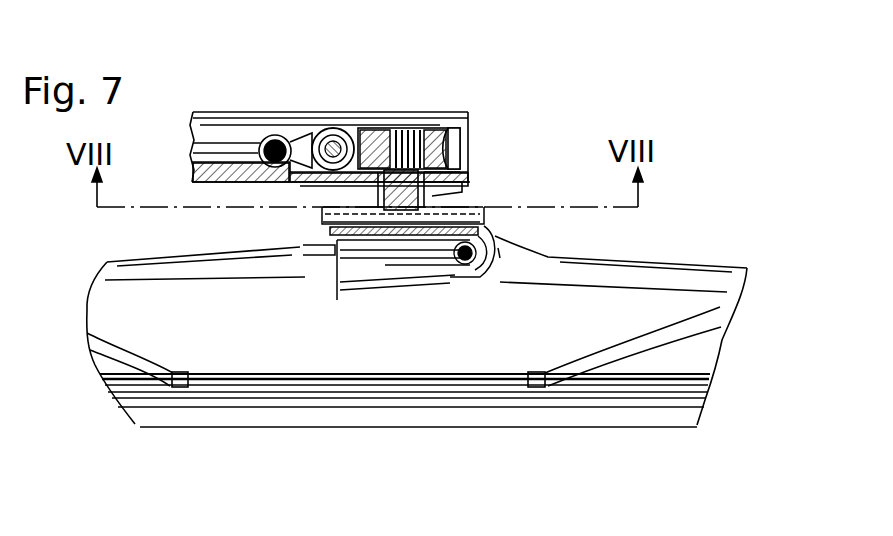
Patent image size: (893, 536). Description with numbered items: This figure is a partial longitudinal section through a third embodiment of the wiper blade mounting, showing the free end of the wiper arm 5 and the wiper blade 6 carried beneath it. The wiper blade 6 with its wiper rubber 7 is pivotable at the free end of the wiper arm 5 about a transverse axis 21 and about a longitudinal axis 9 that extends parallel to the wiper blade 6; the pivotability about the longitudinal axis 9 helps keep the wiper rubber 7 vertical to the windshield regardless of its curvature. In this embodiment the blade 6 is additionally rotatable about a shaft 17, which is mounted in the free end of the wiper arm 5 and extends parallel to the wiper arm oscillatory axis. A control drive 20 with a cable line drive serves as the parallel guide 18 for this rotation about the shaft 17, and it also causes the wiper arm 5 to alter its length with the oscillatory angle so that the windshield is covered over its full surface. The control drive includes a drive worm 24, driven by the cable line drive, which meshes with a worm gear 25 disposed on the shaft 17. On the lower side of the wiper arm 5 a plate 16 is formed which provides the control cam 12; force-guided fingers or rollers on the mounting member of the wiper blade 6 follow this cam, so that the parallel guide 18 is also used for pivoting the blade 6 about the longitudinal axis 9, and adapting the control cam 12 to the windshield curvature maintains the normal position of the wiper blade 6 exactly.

The wiper arm 5 is at (196, 128).
The control drive 20 is at (228, 132).
The drive worm 24 is at (305, 123).
The parallel guide 18 is at (359, 110).
The shaft 17 is at (404, 110).
The worm gear 25 is at (462, 112).
The plate 16 is at (466, 168).
The control cam 12 is at (480, 184).
The wiper blade assembly 6 is at (648, 270).
The wiper rubber 7 is at (690, 396).
The longitudinal axis 9 is at (338, 228).
The transverse axis 21 is at (468, 260).